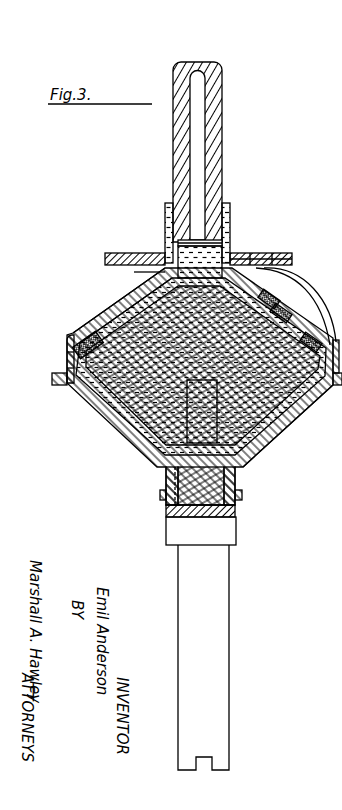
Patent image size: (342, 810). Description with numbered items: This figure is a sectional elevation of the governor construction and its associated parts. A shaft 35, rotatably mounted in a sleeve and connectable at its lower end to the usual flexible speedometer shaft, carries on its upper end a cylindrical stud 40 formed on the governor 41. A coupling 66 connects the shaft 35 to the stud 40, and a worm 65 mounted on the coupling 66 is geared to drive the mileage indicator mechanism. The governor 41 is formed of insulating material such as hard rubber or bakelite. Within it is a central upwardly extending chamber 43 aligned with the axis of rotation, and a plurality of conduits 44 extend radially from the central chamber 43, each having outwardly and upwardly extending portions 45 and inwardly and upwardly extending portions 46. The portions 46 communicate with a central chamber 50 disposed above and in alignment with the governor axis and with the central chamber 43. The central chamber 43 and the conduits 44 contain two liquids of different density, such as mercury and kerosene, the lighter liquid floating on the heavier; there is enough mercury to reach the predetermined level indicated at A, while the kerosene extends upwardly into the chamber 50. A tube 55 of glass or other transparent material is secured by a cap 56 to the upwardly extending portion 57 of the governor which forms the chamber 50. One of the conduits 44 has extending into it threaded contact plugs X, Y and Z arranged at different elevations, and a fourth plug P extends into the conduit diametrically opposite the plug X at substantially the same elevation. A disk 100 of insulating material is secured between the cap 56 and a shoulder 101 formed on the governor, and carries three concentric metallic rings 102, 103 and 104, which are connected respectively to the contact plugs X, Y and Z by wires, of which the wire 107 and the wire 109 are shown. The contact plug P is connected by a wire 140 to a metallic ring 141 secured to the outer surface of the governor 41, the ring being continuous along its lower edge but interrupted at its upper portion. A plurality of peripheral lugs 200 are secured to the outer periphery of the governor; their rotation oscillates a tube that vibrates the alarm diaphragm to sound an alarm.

The shaft 35 is at (223, 578).
The cylindrical stud 40 is at (210, 497).
The governor 41 is at (283, 430).
The central chamber 43 is at (157, 454).
The conduits 44 is at (160, 470).
The outwardly and upwardly extending portions 45 is at (113, 423).
The inwardly and upwardly extending portions 46 is at (118, 302).
The central chamber 50 is at (212, 240).
The tube 55 is at (223, 112).
The cap 56 is at (228, 212).
The upwardly extending portion 57 is at (237, 250).
The worm 65 is at (160, 494).
The coupling 66 is at (230, 529).
The disk 100 is at (105, 258).
The shoulder 101 is at (139, 272).
The metallic ring 102 is at (288, 258).
The metallic ring 103 is at (272, 258).
The metallic ring 104 is at (240, 256).
The wire 107 is at (304, 318).
The wire 109 is at (178, 252).
The wire 140 is at (67, 337).
The metallic ring 141 is at (65, 368).
The peripheral lugs 200 is at (55, 387).
The mercury level A is at (68, 352).
The contact plug P is at (80, 327).
The contact plug X is at (316, 337).
The contact plug Y is at (288, 310).
The contact plug Z is at (275, 296).